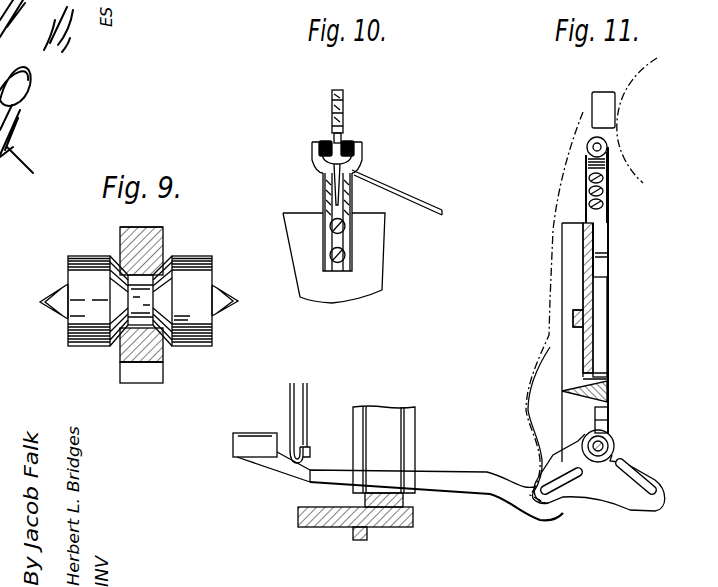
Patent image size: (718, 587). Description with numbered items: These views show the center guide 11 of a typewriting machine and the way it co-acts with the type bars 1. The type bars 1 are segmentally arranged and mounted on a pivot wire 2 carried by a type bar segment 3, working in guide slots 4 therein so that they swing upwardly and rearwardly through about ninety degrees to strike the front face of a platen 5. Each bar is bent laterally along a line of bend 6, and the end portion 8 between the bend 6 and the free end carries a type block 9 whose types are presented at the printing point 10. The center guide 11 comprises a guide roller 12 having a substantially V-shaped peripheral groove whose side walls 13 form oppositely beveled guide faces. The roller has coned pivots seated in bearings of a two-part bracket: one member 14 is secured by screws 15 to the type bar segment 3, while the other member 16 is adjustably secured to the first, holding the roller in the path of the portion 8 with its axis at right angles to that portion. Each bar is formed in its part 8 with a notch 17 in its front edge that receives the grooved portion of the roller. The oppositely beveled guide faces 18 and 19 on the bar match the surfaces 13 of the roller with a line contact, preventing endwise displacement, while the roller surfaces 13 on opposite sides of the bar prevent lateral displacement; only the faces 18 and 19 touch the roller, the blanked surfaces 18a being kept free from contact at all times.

In FIG. 9, the type bar 1 is at (146, 384).
In FIG. 10, the type bar 1 is at (405, 176).
In FIG. 11, the type bar 1 is at (470, 487).
In FIG. 11, the pivot wire 2 is at (608, 442).
In FIG. 10, the type bar segment 3 is at (334, 258).
In FIG. 11, the type bar segment 3 is at (609, 315).
In FIG. 11, the guide slot 4 is at (603, 405).
In FIG. 11, the platen 5 is at (640, 171).
In FIG. 11, the line of the bend 6 is at (303, 482).
In FIG. 10, the end portion of the type bar 8 is at (345, 137).
In FIG. 11, the end portion of the type bar 8 is at (280, 462).
In FIG. 10, the type block 9 is at (344, 96).
In FIG. 11, the type block 9 is at (245, 447).
In FIG. 11, the printing point 10 is at (605, 137).
In FIG. 10, the center guide 11 is at (324, 186).
In FIG. 11, the center guide 11 is at (610, 187).
In FIG. 9, the guide roller 12 is at (193, 257).
In FIG. 10, the guide roller 12 is at (323, 143).
In FIG. 9, the side walls of the groove 13 is at (112, 288).
In FIG. 10, the bracket member 14 is at (350, 192).
In FIG. 10, the screws 15 is at (346, 226).
In FIG. 10, the bracket member 16 is at (313, 166).
In FIG. 11, the notch 17 is at (307, 446).
In FIG. 9, the beveled guide face 18 is at (118, 347).
In FIG. 11, the beveled guide face 18 is at (309, 401).
In FIG. 9, the blanked surfaces 18a is at (140, 240).
In FIG. 9, the beveled guide face 19 is at (122, 252).
In FIG. 11, the beveled guide face 19 is at (290, 396).